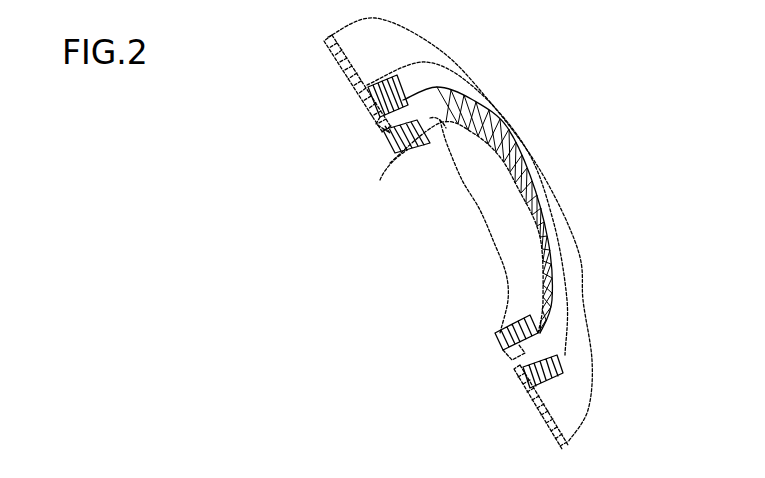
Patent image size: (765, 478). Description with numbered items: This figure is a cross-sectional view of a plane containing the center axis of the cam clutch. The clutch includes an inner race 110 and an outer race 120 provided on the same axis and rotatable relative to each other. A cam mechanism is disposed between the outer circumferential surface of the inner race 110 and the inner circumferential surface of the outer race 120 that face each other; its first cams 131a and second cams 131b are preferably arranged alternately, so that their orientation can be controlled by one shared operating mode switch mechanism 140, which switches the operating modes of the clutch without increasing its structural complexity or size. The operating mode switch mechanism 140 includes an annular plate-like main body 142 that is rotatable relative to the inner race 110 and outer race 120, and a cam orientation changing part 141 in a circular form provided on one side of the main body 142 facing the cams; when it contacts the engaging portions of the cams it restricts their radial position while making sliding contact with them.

The inner race 110 is at (530, 197).
The outer race 120 is at (503, 123).
The first cams 131a is at (407, 148).
The second cams 131b is at (441, 128).
The operating mode switch mechanism 140 is at (273, 163).
The cam orientation changing part 141 is at (385, 141).
The main body 142 is at (368, 88).